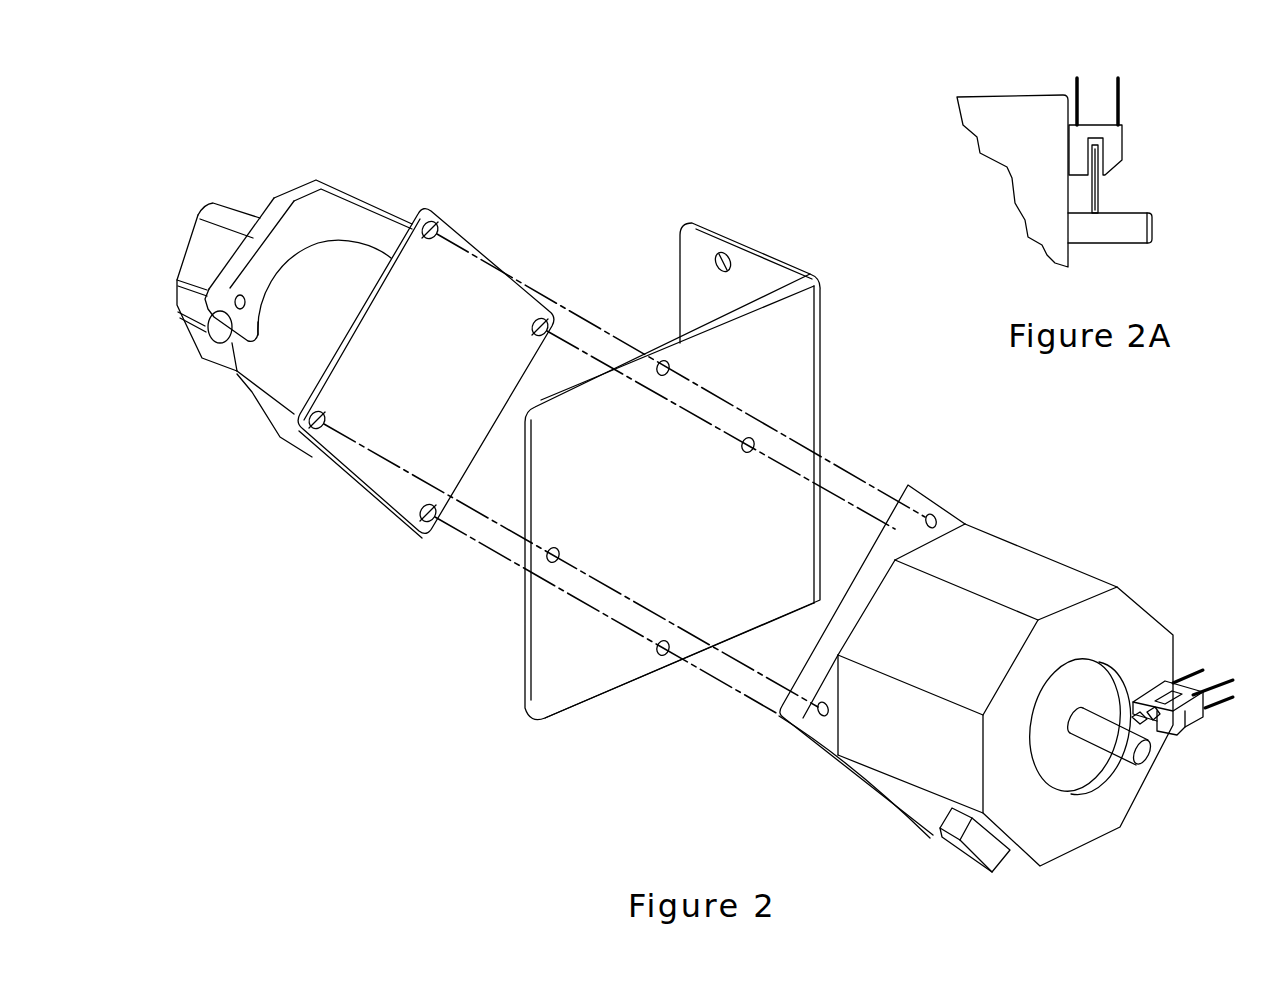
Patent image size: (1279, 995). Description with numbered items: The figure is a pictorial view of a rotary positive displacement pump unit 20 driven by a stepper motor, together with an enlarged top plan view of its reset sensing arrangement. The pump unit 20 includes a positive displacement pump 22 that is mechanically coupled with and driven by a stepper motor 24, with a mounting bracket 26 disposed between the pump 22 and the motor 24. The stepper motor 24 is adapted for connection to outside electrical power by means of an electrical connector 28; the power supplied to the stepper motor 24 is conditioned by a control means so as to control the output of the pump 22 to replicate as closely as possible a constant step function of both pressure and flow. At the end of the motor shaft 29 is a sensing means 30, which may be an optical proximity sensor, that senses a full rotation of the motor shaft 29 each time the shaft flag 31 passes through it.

In FIG. 2, the rotary positive displacement pump unit 20 is at (366, 665).
In FIG. 2, the positive displacement pump 22 is at (367, 199).
In FIG. 2, the stepper motor 24 is at (1015, 543).
In FIG. 2, the mounting bracket 26 is at (822, 306).
In FIG. 2, the electrical connector 28 is at (958, 852).
In FIG. 2, the motor shaft 29 is at (1122, 757).
In FIG. 2A, the motor shaft 29 is at (1139, 213).
In FIG. 2, the sensing means 30 is at (1192, 730).
In FIG. 2A, the sensing means 30 is at (1122, 148).
In FIG. 2, the shaft flag 31 is at (1157, 730).
In FIG. 2A, the shaft flag 31 is at (1100, 185).